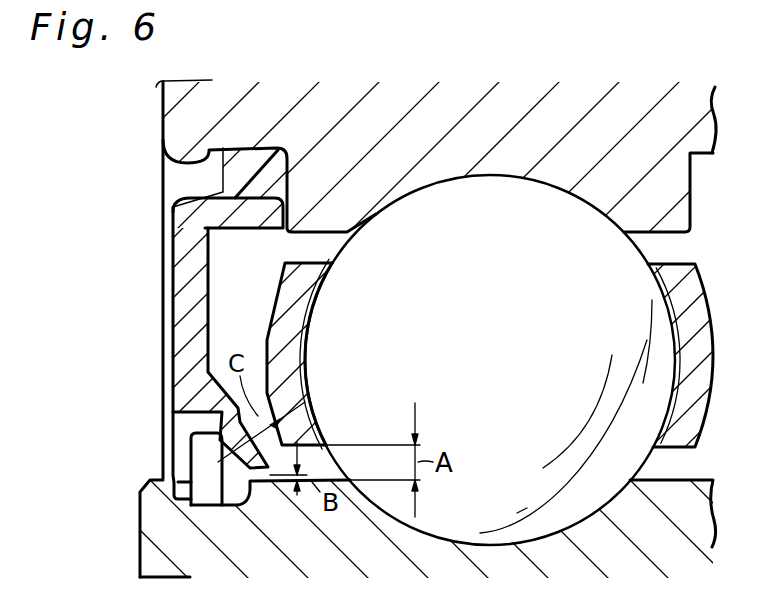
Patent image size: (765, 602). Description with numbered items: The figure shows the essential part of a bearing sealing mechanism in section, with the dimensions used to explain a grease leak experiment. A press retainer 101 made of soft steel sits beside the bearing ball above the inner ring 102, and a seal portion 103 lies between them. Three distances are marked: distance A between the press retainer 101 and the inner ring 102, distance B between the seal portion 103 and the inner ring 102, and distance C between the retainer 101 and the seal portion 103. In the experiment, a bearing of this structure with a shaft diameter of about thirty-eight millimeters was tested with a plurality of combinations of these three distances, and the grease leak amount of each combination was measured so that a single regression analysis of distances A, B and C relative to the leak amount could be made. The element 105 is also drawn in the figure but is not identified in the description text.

The press retainer 101 is at (288, 276).
The inner ring 102 is at (260, 533).
The seal portion 103 is at (190, 444).
The seal lip tip 105 is at (273, 478).